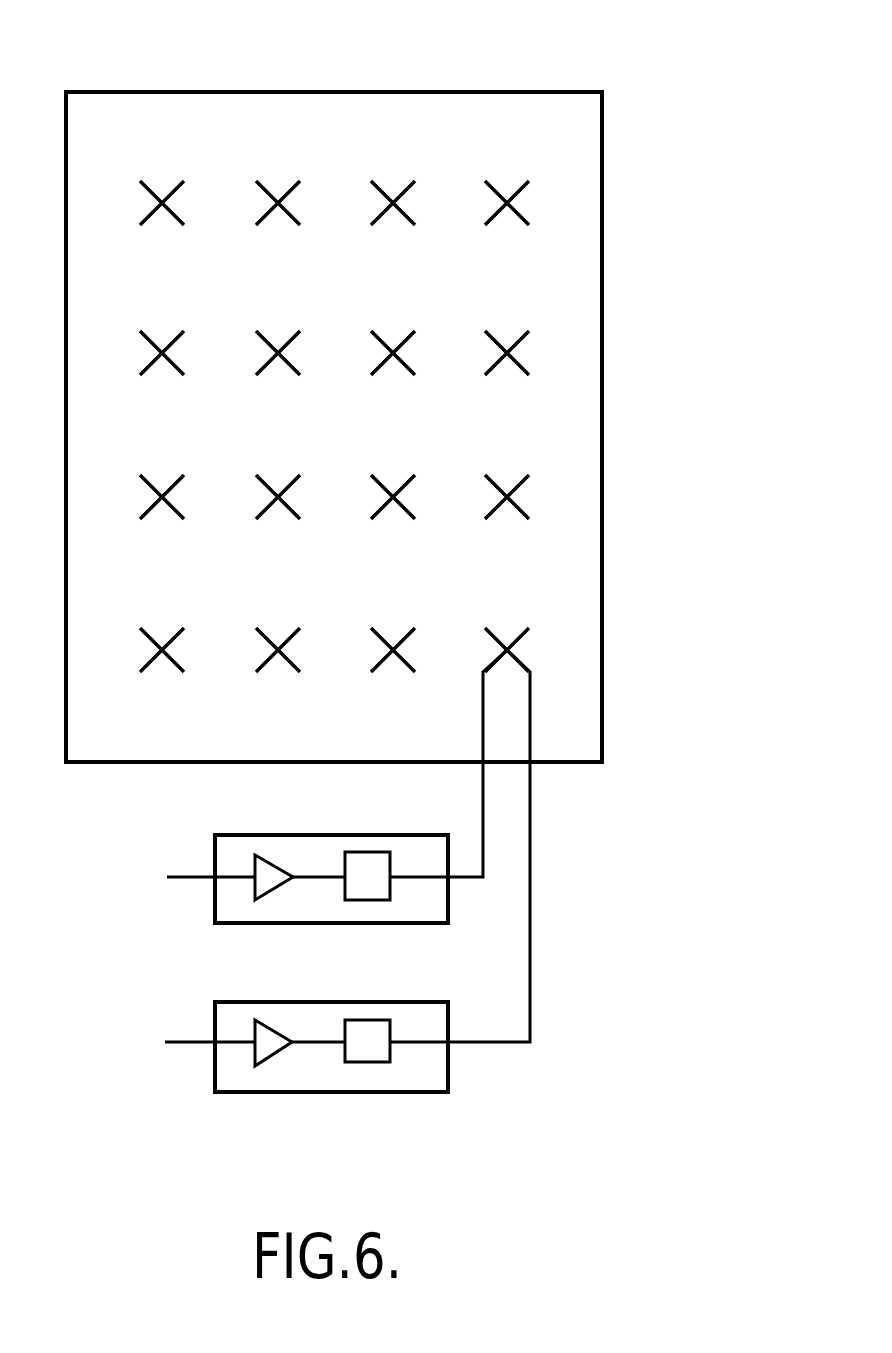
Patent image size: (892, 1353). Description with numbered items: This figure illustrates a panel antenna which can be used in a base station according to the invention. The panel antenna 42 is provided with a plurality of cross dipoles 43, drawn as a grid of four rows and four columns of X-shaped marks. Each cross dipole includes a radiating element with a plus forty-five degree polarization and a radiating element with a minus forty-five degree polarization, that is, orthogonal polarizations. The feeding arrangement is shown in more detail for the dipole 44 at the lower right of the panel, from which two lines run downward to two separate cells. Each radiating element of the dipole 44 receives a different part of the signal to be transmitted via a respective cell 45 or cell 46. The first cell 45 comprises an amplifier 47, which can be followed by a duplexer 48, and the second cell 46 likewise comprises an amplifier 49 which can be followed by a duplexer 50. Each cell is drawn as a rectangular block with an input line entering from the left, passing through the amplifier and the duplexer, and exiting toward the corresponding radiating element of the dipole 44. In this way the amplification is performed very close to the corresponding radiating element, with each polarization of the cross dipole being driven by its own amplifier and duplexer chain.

The panel antenna 42 is at (513, 91).
The cross dipoles 43 is at (520, 352).
The dipole 44 is at (530, 662).
The cell 45 is at (215, 902).
The cell 46 is at (215, 1073).
The amplifier 47 is at (275, 875).
The duplexer 48 is at (377, 865).
The amplifier 49 is at (272, 1048).
The duplexer 50 is at (372, 1050).